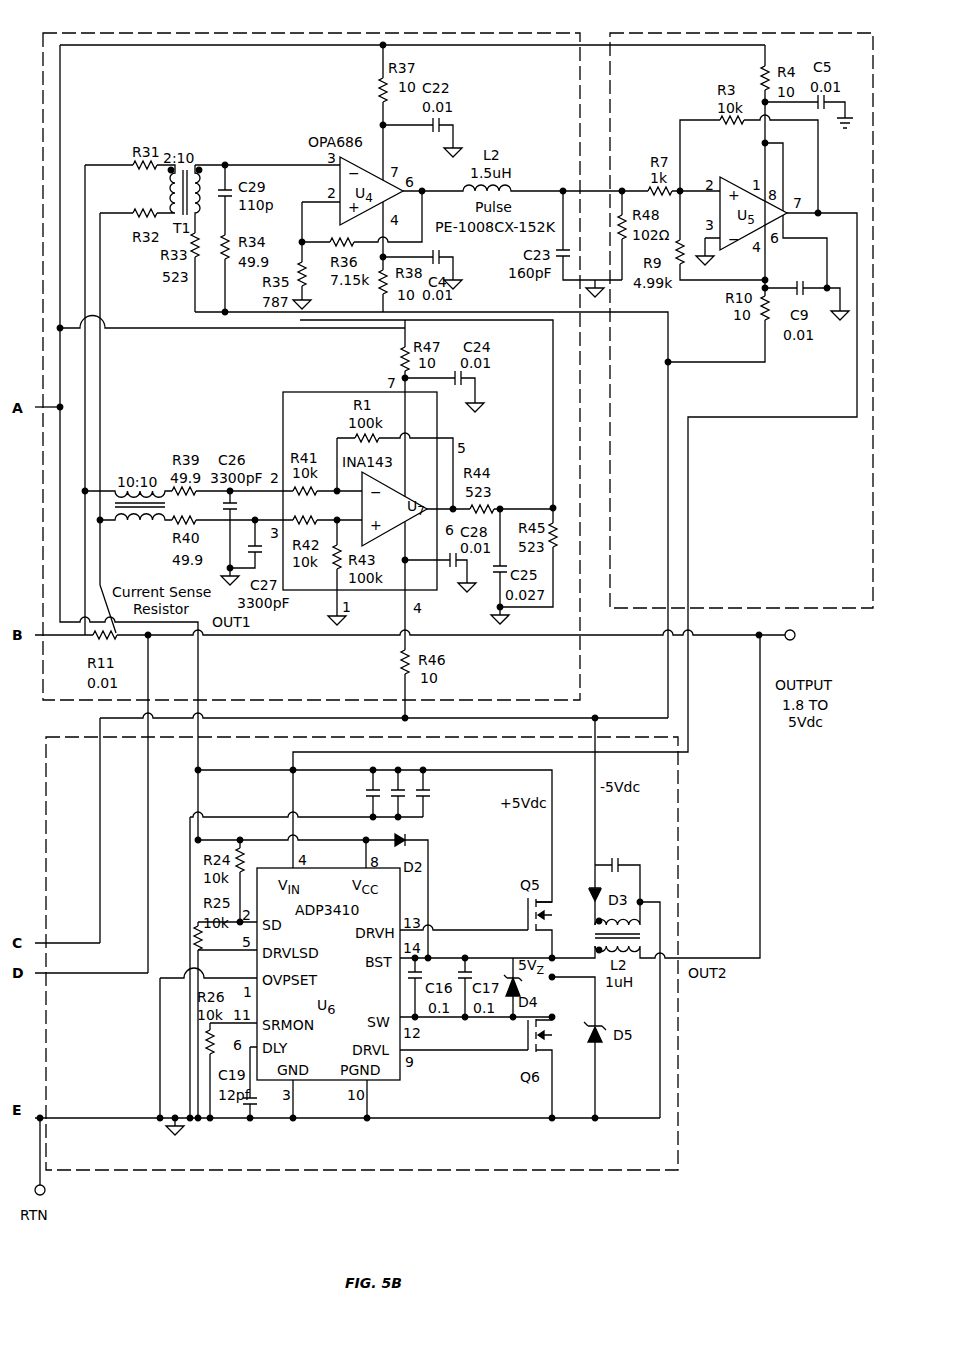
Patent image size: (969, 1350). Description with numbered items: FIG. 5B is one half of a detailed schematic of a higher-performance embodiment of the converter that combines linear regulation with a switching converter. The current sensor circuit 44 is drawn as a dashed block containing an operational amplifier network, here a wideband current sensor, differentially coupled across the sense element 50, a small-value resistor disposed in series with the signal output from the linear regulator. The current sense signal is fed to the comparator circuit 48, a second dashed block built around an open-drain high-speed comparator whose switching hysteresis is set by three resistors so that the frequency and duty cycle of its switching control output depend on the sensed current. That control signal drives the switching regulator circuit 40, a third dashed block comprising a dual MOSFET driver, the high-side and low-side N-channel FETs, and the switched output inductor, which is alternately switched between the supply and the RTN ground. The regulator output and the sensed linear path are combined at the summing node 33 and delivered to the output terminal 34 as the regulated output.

The summing node 33 is at (705, 636).
The output terminal 34 is at (790, 641).
The switching regulator circuit 40 is at (678, 1120).
The current sensor circuit 44 is at (485, 33).
The comparator circuit 48 is at (700, 33).
The sense element 50 is at (115, 640).